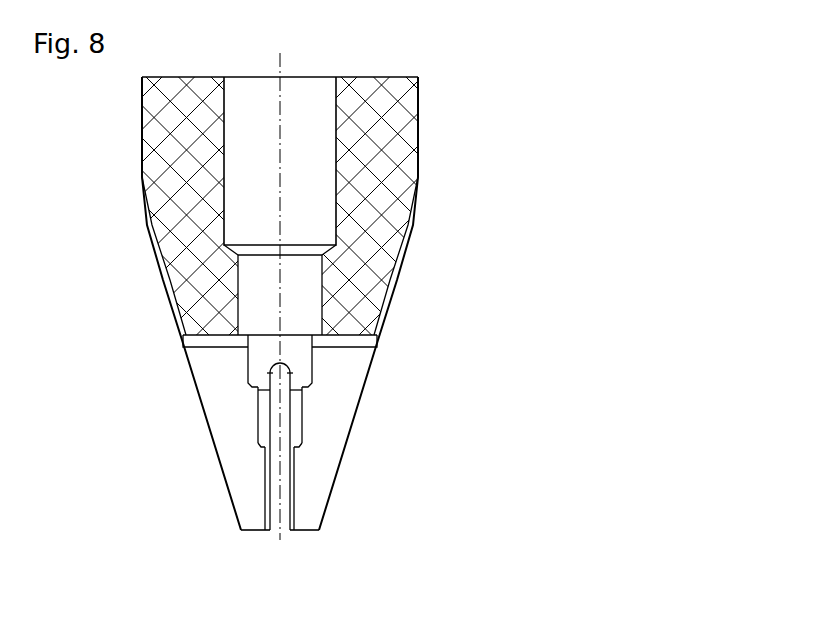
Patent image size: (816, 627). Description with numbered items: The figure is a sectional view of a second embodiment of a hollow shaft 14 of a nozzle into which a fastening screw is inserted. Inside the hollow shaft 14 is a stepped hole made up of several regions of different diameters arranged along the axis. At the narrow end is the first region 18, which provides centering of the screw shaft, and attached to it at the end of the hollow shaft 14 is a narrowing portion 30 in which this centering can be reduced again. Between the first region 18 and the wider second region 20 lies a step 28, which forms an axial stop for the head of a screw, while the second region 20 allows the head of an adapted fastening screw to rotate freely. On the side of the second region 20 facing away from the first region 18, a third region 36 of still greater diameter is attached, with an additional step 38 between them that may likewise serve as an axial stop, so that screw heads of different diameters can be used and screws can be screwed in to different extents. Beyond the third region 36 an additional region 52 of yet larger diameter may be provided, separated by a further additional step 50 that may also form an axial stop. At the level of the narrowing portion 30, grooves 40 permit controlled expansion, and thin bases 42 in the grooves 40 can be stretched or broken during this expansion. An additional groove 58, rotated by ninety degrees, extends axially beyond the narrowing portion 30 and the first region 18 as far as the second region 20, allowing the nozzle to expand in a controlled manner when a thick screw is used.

The hollow shaft 14 is at (418, 98).
The additional region 52 is at (337, 138).
The additional step 50 is at (236, 248).
The third region 36 is at (323, 290).
The additional step 38 is at (228, 338).
The second region 20 is at (315, 362).
The first region 18 is at (305, 415).
The additional groove 58 is at (267, 468).
The step 28 is at (250, 389).
The narrowing portion 30 is at (267, 487).
The thin bases 42 is at (294, 500).
The grooves 40 is at (308, 482).